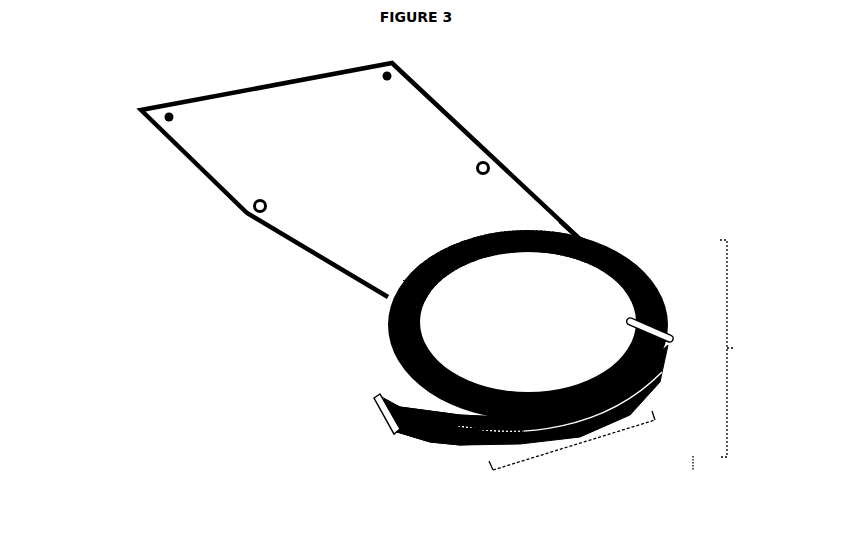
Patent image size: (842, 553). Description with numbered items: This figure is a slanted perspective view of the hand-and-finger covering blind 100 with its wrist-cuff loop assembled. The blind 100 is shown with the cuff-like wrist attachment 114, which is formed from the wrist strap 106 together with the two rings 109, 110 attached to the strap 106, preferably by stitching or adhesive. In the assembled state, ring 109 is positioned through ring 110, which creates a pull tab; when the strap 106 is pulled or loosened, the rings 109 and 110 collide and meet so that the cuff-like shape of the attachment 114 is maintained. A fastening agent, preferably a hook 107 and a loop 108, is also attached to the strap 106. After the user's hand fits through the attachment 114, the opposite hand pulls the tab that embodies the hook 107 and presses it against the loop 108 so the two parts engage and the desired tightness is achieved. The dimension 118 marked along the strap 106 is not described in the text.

The hand-and-finger covering blind 100 is at (105, 80).
The wrist strap 106 is at (537, 384).
The hook 107 is at (464, 452).
The loop 108 is at (487, 262).
The ring 109 is at (393, 447).
The ring 110 is at (676, 358).
The cuff-like wrist attachment 114 is at (733, 355).
The strap length 118 is at (573, 447).